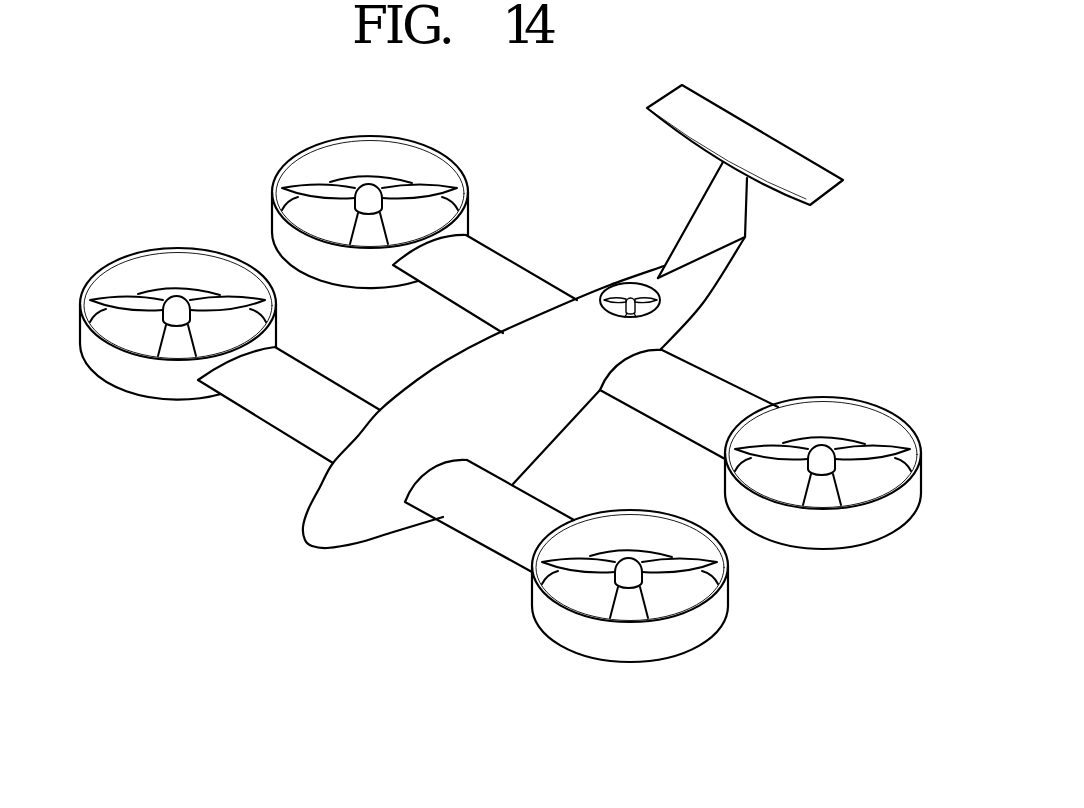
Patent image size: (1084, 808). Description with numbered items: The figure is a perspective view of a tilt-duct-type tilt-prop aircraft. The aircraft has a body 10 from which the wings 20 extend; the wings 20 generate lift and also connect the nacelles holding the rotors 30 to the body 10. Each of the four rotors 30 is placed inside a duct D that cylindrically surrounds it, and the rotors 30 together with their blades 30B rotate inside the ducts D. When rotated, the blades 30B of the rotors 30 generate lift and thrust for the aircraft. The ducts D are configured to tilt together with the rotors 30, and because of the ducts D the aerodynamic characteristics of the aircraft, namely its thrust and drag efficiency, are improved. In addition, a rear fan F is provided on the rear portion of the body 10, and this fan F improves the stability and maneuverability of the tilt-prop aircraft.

The body 10 is at (318, 503).
The wings 20 is at (475, 523).
The rotors 30 is at (625, 572).
The blades 30B is at (685, 565).
The ducts D is at (137, 375).
The rear fan F is at (613, 293).